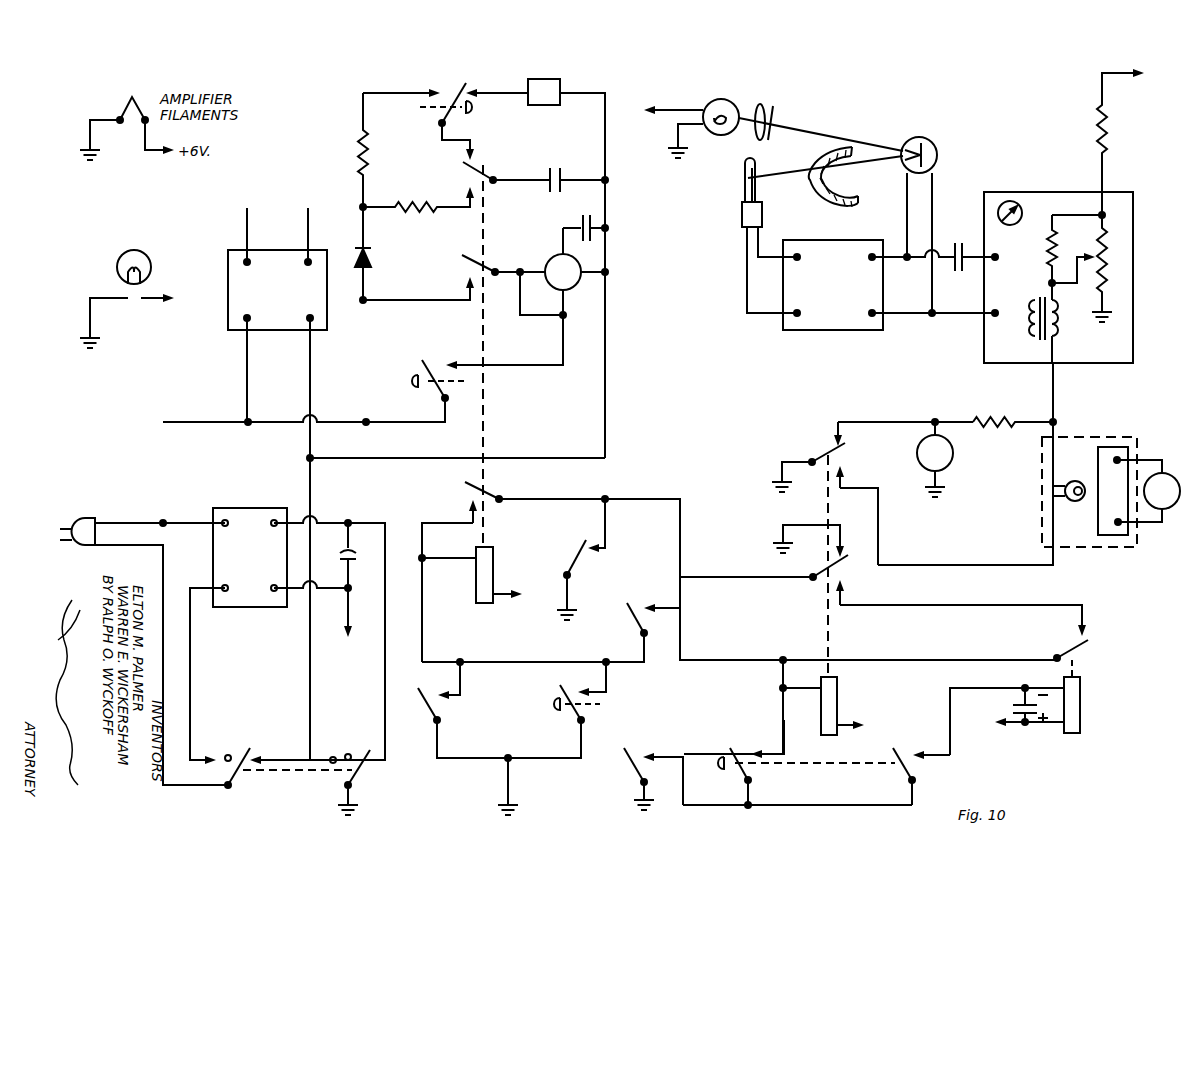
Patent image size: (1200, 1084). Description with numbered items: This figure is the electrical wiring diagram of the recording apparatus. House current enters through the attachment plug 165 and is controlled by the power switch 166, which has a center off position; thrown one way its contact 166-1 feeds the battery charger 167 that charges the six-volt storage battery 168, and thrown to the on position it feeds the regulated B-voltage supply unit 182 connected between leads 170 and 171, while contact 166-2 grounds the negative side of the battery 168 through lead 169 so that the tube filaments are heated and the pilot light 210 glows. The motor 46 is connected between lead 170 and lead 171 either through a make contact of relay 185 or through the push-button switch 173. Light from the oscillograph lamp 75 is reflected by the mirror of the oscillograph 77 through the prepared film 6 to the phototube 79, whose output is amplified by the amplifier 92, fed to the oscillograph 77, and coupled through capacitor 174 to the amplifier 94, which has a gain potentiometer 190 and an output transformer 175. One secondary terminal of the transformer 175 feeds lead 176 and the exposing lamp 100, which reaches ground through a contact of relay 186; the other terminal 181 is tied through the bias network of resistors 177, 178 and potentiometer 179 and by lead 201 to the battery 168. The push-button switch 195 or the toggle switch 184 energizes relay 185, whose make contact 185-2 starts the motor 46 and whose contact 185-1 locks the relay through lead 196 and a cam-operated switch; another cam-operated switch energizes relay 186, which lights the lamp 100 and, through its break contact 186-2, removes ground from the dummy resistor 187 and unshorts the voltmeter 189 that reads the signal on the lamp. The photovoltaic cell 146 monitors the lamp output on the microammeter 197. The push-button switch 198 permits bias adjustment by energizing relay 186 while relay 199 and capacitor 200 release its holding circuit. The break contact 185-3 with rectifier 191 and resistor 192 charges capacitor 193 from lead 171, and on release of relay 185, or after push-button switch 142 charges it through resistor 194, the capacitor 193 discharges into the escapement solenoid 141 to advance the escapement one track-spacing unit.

The pilot light 210 is at (118, 265).
The regulated B-voltage supply unit 182 is at (277, 474).
The resistor 194 is at (360, 152).
The resistor 192 is at (412, 210).
The rectifier 191 is at (375, 258).
The push-button switch 142 is at (456, 86).
The break contact 185- 3 is at (460, 175).
The capacitor 193 is at (548, 173).
The escapement solenoid 141 is at (557, 80).
The second contact group 2 is at (461, 270).
The motor 46 is at (570, 293).
The push-button switch 173 is at (447, 384).
The lead 171 is at (197, 422).
The lead 170 is at (397, 460).
The attachment plug 165 is at (94, 522).
The battery charger 167 is at (269, 636).
The storage battery 168 is at (358, 553).
The lead 169 is at (385, 692).
The power switch 166 is at (272, 770).
The first contact group 1 is at (236, 750).
The relay 185 is at (494, 577).
The lead 196 is at (609, 521).
The toggle switch 184 is at (445, 706).
The push-button switch 195 is at (566, 672).
The push-button switch 198 is at (800, 768).
The relay 186 is at (838, 692).
The capacitor 200 is at (1012, 704).
The relay 199 is at (1080, 710).
The voltmeter 189 is at (949, 462).
The resistor 187 is at (985, 428).
The lead 176 is at (1055, 393).
The photovoltaic cell 146 is at (1110, 440).
The exposing lamp 100 is at (1070, 504).
The microammeter 197 is at (1174, 472).
The oscillograph lamp 75 is at (726, 100).
The oscillograph 77 is at (933, 143).
The phototube 79 is at (742, 189).
The prepared film 6 is at (822, 200).
The amplifier 92 is at (833, 285).
The capacitor 174 is at (972, 242).
The amplifier 94 is at (984, 355).
The potentiometer 190 is at (1001, 204).
The resistor 178 is at (1046, 245).
The terminal 181 is at (1049, 285).
The potentiometer 179 is at (1122, 263).
The output transformer 175 is at (1059, 325).
The resistor 177 is at (1111, 133).
The lead 201 is at (1106, 93).